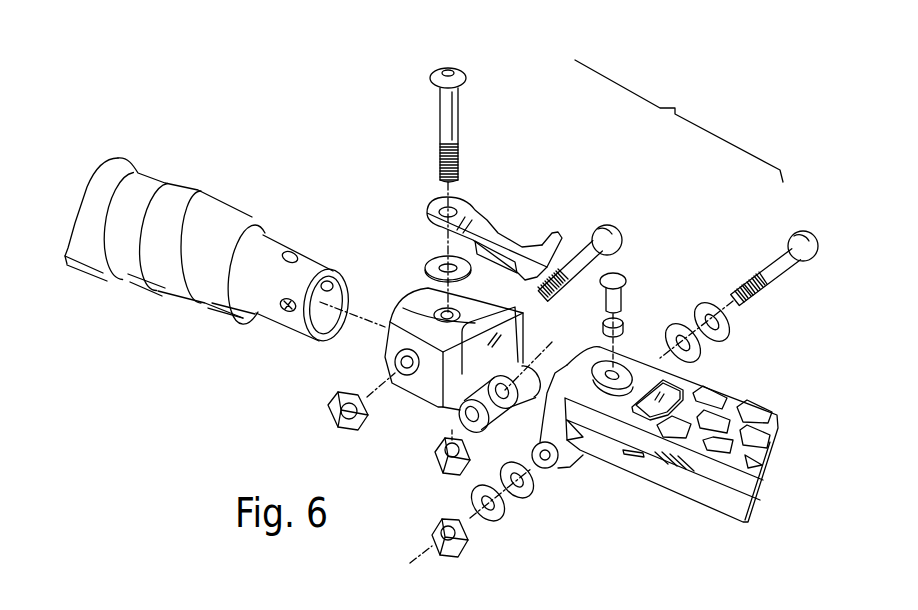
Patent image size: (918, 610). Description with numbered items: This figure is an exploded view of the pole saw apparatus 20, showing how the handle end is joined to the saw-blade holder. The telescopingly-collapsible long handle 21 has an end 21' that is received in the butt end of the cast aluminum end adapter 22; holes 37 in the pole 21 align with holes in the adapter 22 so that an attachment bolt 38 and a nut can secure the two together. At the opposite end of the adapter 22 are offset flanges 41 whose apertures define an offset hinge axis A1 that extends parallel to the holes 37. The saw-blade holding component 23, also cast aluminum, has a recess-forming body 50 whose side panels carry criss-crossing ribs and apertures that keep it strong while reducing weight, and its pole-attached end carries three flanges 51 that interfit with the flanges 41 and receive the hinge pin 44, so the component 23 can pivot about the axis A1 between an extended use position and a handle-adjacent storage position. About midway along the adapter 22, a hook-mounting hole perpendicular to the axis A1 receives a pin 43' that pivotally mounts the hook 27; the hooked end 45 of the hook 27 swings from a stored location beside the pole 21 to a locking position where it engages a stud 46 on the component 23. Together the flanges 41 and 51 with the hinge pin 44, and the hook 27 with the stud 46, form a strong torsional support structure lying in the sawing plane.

The pole saw apparatus 20 is at (679, 121).
The long handle 21 is at (168, 236).
The end of the pole 21' is at (320, 275).
The holes in the pole 37 is at (286, 322).
The end adapter 22 is at (412, 292).
The offset flanges 41 is at (473, 428).
The hinge axis A1 is at (535, 353).
The pin 43' is at (469, 190).
The hook 27 is at (492, 232).
The hooked end 45 is at (553, 232).
The attachment bolt 38 is at (587, 247).
The stud 46 is at (627, 300).
The hinge pin 44 is at (777, 262).
The saw-blade holding component 23 is at (676, 497).
The recess-forming body 50 is at (747, 412).
The flanges 51 is at (558, 473).